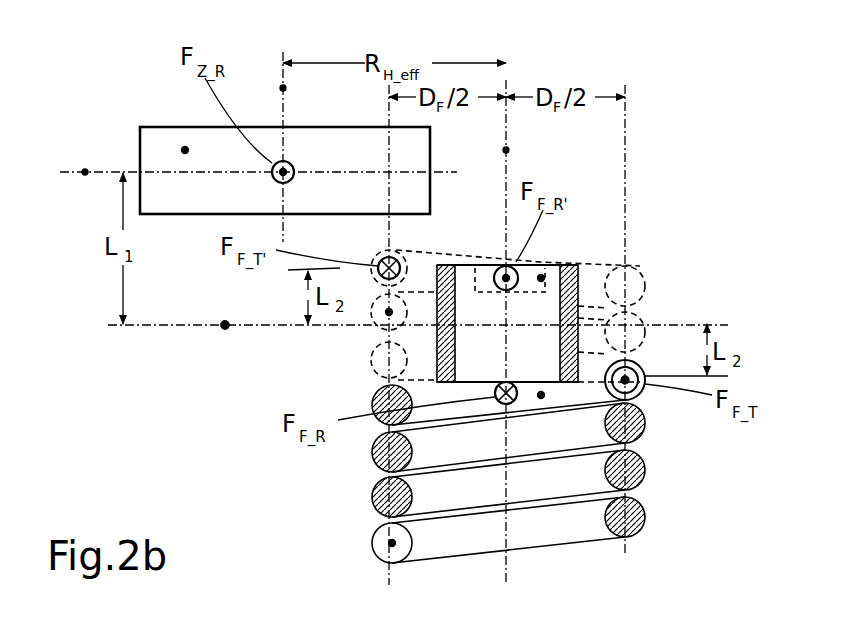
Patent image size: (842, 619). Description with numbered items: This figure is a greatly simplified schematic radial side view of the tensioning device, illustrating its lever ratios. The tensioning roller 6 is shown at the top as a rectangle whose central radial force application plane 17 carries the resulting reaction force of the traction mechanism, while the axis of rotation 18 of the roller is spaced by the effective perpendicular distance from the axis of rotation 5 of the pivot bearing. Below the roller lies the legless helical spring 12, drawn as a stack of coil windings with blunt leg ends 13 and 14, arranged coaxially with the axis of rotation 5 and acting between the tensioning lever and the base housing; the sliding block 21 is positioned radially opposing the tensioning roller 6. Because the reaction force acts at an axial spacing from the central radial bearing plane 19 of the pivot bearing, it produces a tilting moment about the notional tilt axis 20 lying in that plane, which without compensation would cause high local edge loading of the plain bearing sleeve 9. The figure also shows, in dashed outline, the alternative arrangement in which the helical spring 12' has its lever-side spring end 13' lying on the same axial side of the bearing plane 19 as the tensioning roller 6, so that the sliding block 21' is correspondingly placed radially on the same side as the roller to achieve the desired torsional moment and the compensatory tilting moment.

The axis of rotation of the pivot bearing 5 is at (507, 150).
The tensioning roller 6 is at (183, 148).
The plain bearing sleeve 9 is at (606, 283).
The helical spring 12 is at (346, 454).
The helical spring 12' is at (341, 336).
The leg end 13 is at (668, 404).
The lever-side spring end 13' is at (432, 232).
The leg end 14 is at (372, 545).
The central radial force application plane 17 is at (85, 171).
The axis of rotation of the tensioning roller 18 is at (282, 87).
The central radial bearing plane 19 is at (224, 328).
The notional tilt axis 20 is at (225, 325).
The sliding block 21 is at (571, 431).
The sliding block 21' is at (546, 246).